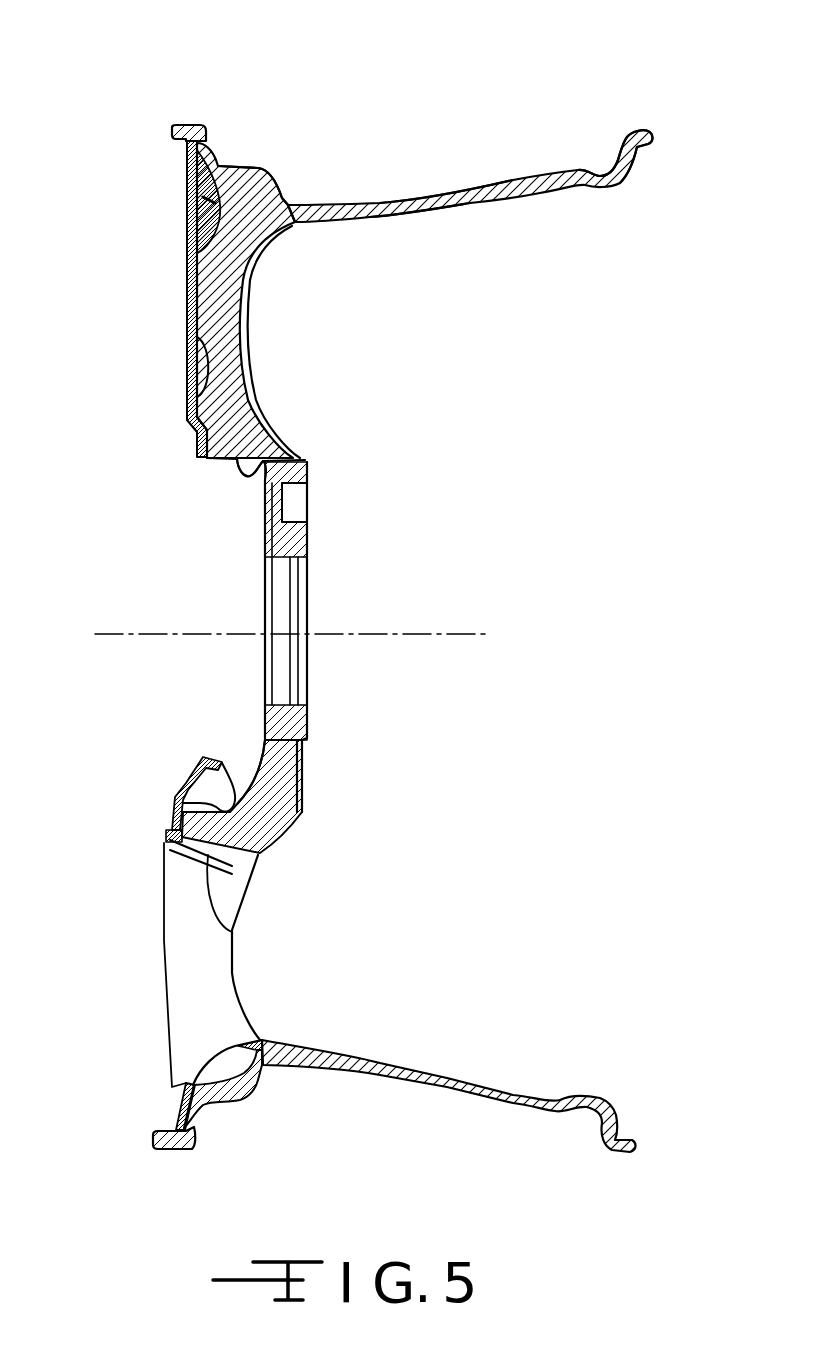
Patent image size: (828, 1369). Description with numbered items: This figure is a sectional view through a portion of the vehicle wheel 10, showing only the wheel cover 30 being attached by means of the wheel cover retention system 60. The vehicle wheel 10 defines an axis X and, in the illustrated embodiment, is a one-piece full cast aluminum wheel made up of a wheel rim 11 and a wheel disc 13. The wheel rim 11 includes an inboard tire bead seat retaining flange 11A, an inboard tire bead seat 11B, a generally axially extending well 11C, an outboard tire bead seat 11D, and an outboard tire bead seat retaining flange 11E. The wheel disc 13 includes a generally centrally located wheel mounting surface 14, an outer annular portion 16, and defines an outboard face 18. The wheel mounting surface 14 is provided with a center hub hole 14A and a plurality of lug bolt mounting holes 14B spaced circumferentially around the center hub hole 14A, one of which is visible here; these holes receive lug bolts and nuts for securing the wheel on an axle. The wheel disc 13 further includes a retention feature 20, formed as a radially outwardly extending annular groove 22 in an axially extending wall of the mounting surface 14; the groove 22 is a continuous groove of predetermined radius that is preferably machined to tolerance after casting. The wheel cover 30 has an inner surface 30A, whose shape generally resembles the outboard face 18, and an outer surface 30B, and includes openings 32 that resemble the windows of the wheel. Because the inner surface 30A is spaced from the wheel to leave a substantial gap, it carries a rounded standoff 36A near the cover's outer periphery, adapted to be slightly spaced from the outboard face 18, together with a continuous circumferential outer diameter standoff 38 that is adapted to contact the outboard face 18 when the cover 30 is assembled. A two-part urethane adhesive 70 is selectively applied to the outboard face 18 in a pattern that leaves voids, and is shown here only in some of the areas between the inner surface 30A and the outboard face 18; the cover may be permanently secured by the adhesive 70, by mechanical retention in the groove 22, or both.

The vehicle wheel 10 is at (140, 1180).
The wheel rim 11 is at (512, 172).
The inboard tire bead seat retaining flange 11A is at (630, 130).
The inboard tire bead seat 11B is at (597, 168).
The well 11C is at (390, 200).
The outboard tire bead seat 11D is at (240, 165).
The outboard tire bead seat retaining flange 11E is at (192, 125).
The wheel disc 13 is at (318, 843).
The wheel mounting surface 14 is at (310, 767).
The center hub hole 14A is at (283, 705).
The lug bolt mounting hole 14B is at (297, 487).
The outer annular portion 16 is at (292, 305).
The outboard face 18 is at (185, 358).
The retention feature 20 is at (233, 492).
The annular groove 22 is at (305, 460).
The vehicle wheel cover 30 is at (155, 858).
The inner surface 30A is at (187, 397).
The outer surface 30B is at (187, 305).
The openings 32 is at (167, 912).
The standoff 36A is at (220, 205).
The circumferential outer diameter standoff 38 is at (218, 140).
The vehicle wheel cover retention system 60 is at (160, 777).
The two-part urethane adhesive 70 is at (187, 192).
The axis X is at (443, 637).